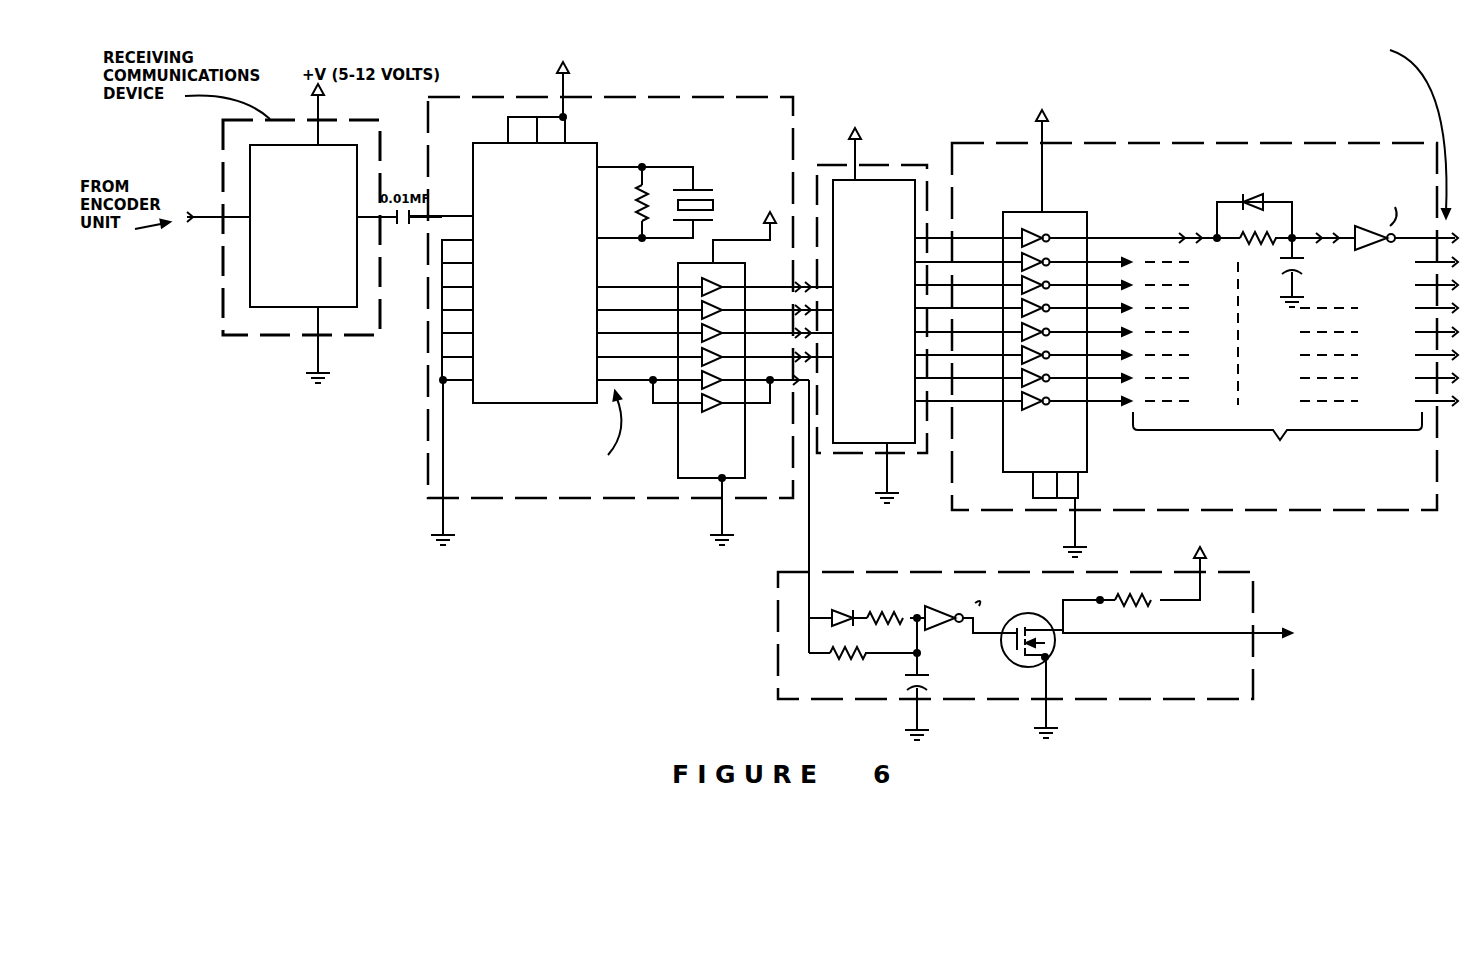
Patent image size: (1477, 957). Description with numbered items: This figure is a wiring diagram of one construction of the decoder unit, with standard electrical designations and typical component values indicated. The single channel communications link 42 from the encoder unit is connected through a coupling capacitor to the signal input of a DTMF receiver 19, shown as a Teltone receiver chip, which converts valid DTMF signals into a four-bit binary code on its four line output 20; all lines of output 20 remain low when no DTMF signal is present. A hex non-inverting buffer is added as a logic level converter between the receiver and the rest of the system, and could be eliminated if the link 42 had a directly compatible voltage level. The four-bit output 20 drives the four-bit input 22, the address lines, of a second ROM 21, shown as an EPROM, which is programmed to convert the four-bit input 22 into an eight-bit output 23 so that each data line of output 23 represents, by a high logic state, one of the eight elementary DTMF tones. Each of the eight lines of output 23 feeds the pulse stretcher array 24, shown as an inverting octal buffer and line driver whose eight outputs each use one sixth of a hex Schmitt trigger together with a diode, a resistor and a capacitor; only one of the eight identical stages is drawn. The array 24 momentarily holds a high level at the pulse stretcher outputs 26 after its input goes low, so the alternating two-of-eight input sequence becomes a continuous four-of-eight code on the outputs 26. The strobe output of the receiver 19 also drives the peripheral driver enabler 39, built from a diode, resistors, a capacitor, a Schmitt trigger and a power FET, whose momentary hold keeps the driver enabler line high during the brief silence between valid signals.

The DTMF receiver 19 is at (655, 97).
The four line output 20 is at (783, 270).
The second ROM 21 is at (883, 165).
The four-bit input 22 is at (823, 447).
The eight-bit output 23 is at (921, 421).
The pulse stretcher array 24 is at (1183, 143).
The pulse stretcher outputs 26 is at (1440, 398).
The peripheral driver enabler 39 is at (790, 699).
The single channel communications link 42 is at (210, 245).